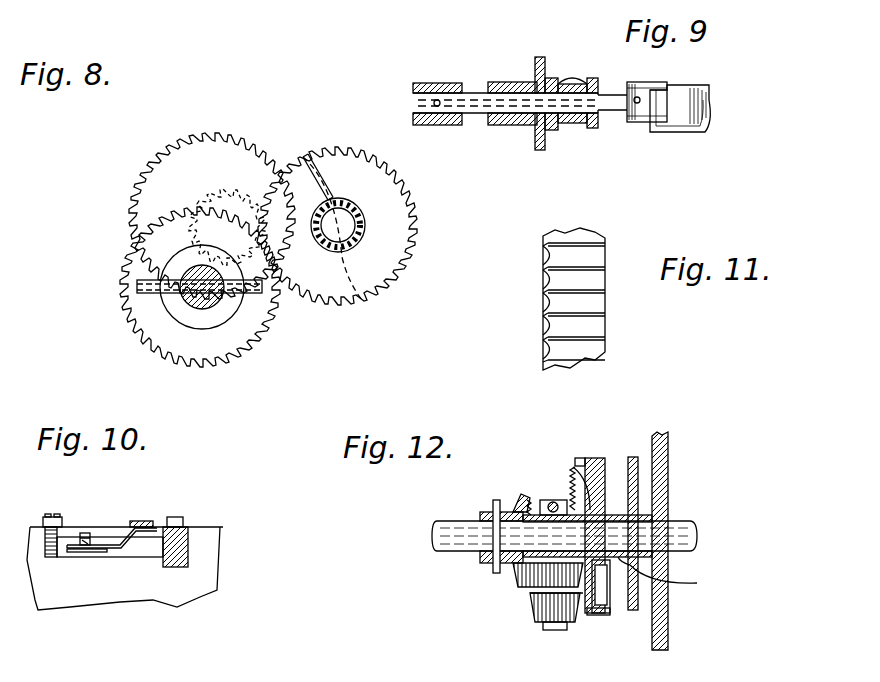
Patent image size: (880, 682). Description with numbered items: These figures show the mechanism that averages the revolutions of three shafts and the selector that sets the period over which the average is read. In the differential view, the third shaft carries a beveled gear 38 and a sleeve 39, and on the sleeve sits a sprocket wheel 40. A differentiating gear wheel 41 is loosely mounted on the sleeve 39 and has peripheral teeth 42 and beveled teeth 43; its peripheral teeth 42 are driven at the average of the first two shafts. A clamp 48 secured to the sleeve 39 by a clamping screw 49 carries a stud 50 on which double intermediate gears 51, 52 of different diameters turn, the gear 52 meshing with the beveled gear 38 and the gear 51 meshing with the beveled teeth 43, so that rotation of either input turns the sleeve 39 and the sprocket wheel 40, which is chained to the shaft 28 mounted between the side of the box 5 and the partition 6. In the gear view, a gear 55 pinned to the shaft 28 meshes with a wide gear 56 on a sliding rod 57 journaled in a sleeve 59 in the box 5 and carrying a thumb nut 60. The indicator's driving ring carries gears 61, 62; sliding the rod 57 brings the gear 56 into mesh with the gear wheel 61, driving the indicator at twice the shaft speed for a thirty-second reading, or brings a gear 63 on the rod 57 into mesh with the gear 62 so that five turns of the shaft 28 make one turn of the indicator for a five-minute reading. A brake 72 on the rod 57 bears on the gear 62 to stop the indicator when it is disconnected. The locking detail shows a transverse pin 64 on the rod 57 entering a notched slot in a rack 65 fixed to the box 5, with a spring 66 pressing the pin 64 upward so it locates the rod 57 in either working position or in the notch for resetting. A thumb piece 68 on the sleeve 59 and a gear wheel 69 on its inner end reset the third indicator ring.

In FIG. 9, the box 5 is at (541, 57).
In FIG. 10, the box 5 is at (163, 593).
In FIG. 12, the box 5 is at (442, 528).
In FIG. 12, the partition 6 is at (668, 445).
In FIG. 8, the shaft 28 is at (210, 297).
In FIG. 12, the beveled gear 38 is at (517, 500).
In FIG. 12, the sleeve 39 is at (670, 576).
In FIG. 12, the sprocket wheel 40 is at (633, 457).
In FIG. 11, the differentiating gear wheel 41 is at (600, 325).
In FIG. 12, the differentiating gear wheel 41 is at (586, 460).
In FIG. 11, the peripheral teeth 42 is at (581, 243).
In FIG. 12, the peripheral teeth 42 is at (600, 615).
In FIG. 11, the beveled teeth 43 is at (548, 242).
In FIG. 12, the beveled teeth 43 is at (577, 468).
In FIG. 12, the clamp 48 is at (542, 502).
In FIG. 12, the clamping screw 49 is at (553, 502).
In FIG. 12, the stud 50 is at (550, 635).
In FIG. 12, the intermediate gear 51 is at (530, 607).
In FIG. 12, the intermediate gear 52 is at (521, 585).
In FIG. 8, the gear 55 is at (140, 322).
In FIG. 8, the gear 56 is at (347, 157).
In FIG. 8, the sliding rod 57 is at (348, 226).
In FIG. 9, the sliding rod 57 is at (470, 95).
In FIG. 9, the sleeve 59 is at (562, 84).
In FIG. 9, the thumb nut 60 is at (420, 83).
In FIG. 8, the gear wheel 61 is at (235, 205).
In FIG. 8, the gear 62 is at (210, 145).
In FIG. 8, the gear 63 is at (362, 300).
In FIG. 9, the gear 63 is at (676, 83).
In FIG. 10, the pin 64 is at (84, 533).
In FIG. 10, the rack 65 is at (113, 543).
In FIG. 10, the spring 66 is at (117, 556).
In FIG. 9, the thumb piece 68 is at (512, 82).
In FIG. 9, the gear wheel 69 is at (600, 80).
In FIG. 8, the brake 72 is at (342, 182).
In FIG. 9, the brake 72 is at (668, 123).